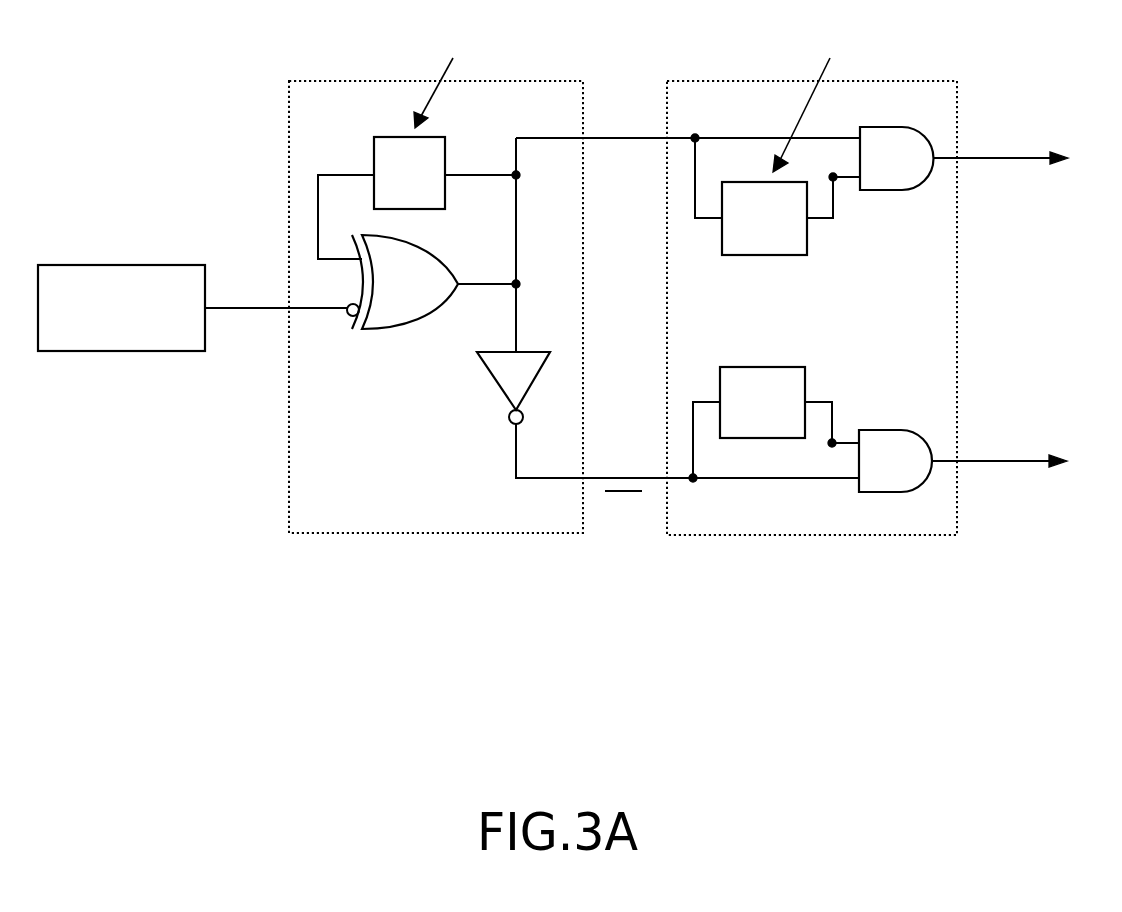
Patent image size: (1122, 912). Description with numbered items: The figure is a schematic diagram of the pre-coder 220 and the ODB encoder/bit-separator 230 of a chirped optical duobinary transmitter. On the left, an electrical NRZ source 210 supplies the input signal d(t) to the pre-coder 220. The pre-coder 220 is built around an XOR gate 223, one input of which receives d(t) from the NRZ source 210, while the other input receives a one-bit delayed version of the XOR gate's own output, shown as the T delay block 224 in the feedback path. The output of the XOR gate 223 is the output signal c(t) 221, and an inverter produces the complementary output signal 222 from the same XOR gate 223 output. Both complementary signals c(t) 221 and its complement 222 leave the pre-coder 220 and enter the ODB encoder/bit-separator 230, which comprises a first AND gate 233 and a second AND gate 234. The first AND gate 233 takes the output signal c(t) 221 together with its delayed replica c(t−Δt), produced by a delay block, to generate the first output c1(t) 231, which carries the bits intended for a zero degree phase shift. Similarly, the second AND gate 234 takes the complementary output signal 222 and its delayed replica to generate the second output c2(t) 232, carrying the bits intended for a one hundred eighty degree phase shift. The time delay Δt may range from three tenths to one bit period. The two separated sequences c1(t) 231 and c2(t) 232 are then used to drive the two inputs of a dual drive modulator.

The NRZ source 210 is at (101, 337).
The pre-coder 220 is at (514, 526).
The output signal c(t) 221 is at (622, 92).
The complementary output signal 222 is at (618, 525).
The XOR gate 223 is at (394, 312).
The 1-bit delay T flip-flop 224 is at (392, 204).
The ODB encoder/bit-separator 230 is at (886, 526).
The first output c1(t) 231 is at (535, 373).
The second output c2(t) 232 is at (1010, 418).
The first AND gate 233 is at (879, 171).
The second AND gate 234 is at (877, 474).